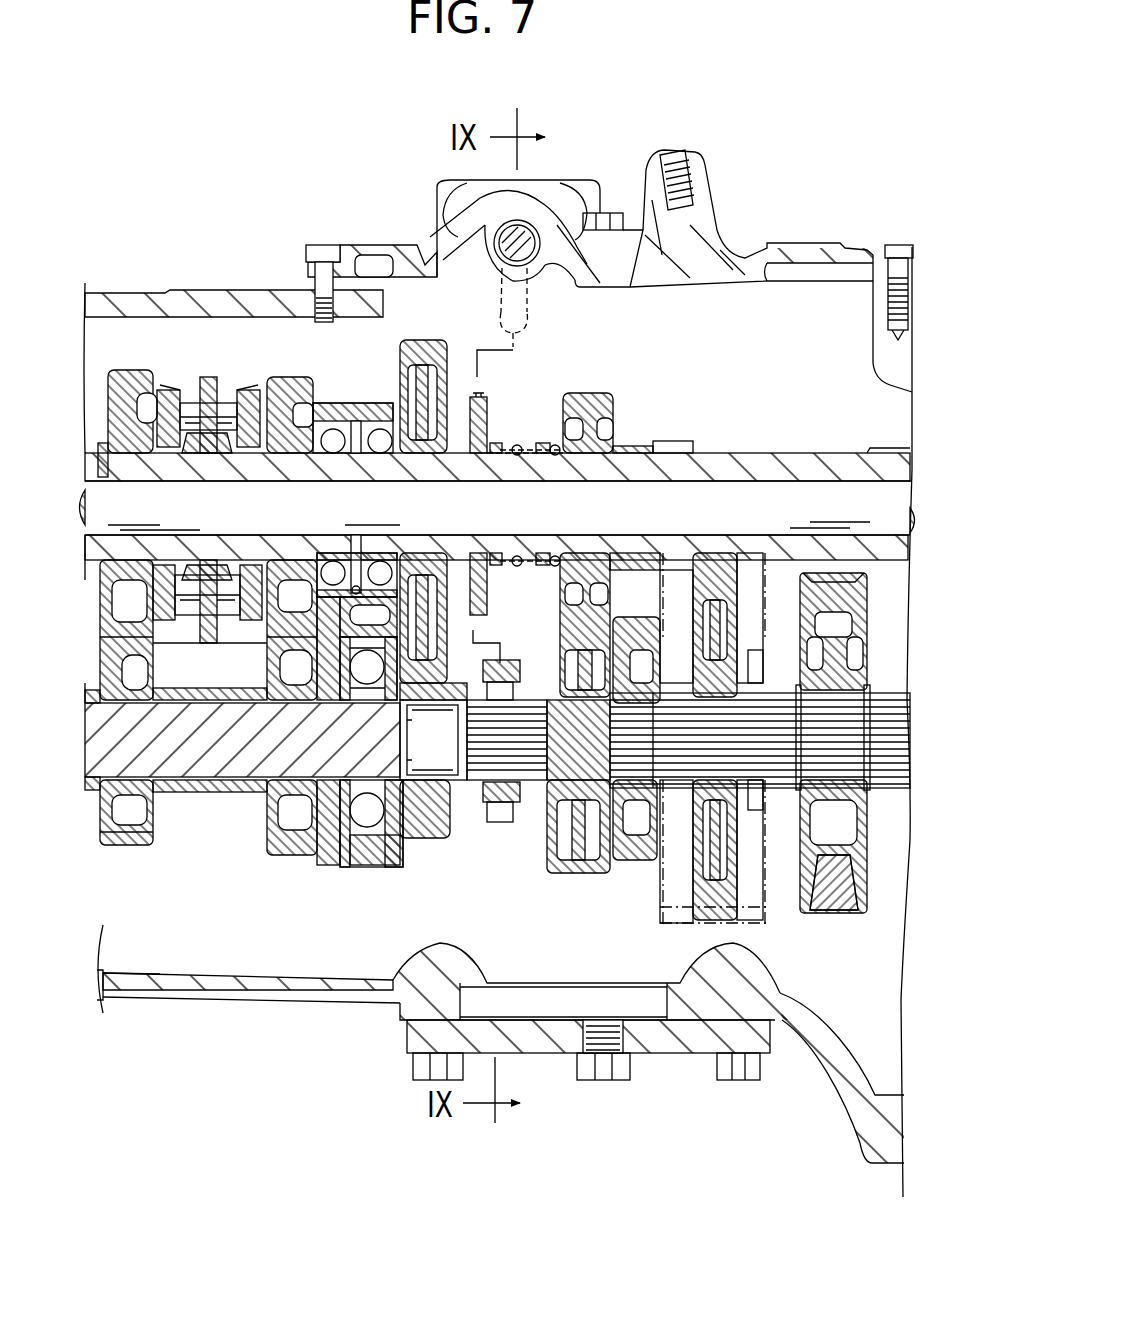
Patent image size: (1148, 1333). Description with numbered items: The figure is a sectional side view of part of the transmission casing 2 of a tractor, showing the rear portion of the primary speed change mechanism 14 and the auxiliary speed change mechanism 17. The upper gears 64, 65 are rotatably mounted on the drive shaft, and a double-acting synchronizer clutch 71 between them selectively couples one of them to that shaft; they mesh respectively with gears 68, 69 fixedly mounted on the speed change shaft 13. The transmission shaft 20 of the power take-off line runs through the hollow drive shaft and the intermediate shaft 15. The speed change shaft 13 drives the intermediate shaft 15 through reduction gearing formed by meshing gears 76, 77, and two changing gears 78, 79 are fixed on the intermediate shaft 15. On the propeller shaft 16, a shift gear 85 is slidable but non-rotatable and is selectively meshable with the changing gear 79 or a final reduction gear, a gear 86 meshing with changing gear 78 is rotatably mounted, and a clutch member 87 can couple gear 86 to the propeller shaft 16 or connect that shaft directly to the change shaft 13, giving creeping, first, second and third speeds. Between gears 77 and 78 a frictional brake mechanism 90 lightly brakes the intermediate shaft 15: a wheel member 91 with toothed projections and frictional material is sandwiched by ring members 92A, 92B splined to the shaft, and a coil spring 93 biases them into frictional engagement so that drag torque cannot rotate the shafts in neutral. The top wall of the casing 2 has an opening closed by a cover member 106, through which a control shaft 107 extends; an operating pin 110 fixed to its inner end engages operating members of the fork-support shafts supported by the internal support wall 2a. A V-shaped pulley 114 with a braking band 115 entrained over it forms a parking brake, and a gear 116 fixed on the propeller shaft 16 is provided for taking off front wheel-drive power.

The transmission casing 2 is at (273, 990).
The support wall 2a is at (368, 860).
The speed change shaft 13 is at (215, 752).
The primary speed change mechanism 14 is at (160, 935).
The intermediate shaft 15 is at (732, 456).
The propeller shaft 16 is at (887, 770).
The auxiliary speed change mechanism 17 is at (622, 955).
The transmission shaft 20 is at (843, 497).
The gear 64 is at (127, 375).
The gear 65 is at (281, 383).
The gear 68 is at (127, 850).
The gear 69 is at (287, 857).
The double-acting synchronizer clutch 71 is at (195, 383).
The gear 76 is at (420, 818).
The gear 77 is at (410, 345).
The changing gear 78 is at (600, 400).
The changing gear 79 is at (670, 446).
The shift gear 85 is at (712, 920).
The gear 86 is at (568, 875).
The clutch member 87 is at (490, 825).
The frictional brake mechanism 90 is at (505, 380).
The wheel member 91 is at (482, 604).
The ring member 92A is at (468, 415).
The ring member 92B is at (490, 427).
The coil spring 93 is at (560, 535).
The cover member 106 is at (382, 245).
The control shaft 107 is at (519, 241).
The operating pin 110 is at (437, 248).
The V-shaped pulley 114 is at (803, 575).
The braking band 115 is at (828, 915).
The gear 116 is at (628, 862).